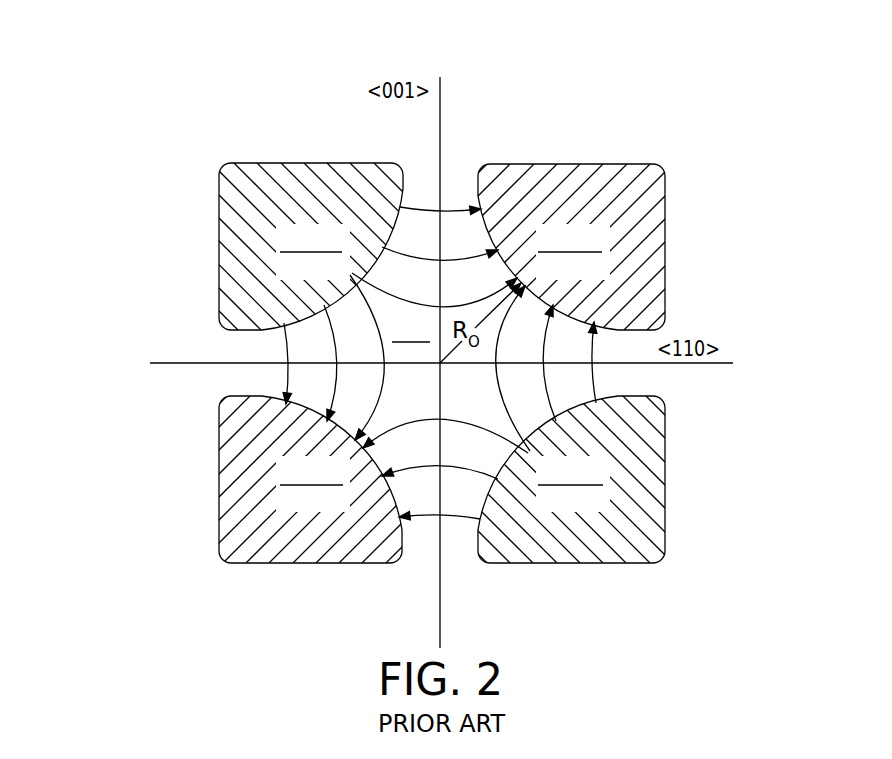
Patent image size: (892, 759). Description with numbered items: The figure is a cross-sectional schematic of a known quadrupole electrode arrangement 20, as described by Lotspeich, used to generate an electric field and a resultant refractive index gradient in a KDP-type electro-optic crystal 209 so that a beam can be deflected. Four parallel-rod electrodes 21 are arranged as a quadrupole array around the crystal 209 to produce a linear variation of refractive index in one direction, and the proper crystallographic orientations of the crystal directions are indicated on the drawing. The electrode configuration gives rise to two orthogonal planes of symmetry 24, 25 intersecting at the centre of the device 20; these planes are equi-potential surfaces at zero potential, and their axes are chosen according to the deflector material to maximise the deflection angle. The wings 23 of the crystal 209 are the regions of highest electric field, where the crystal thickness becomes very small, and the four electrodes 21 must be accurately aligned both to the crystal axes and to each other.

The quadrupole electrode arrangement 20 is at (625, 133).
The parallel-rod electrodes 21 is at (218, 183).
The wings 23 is at (463, 173).
The plane of symmetry 24 is at (442, 632).
The plane of symmetry 25 is at (175, 362).
The crystal 209 is at (411, 330).